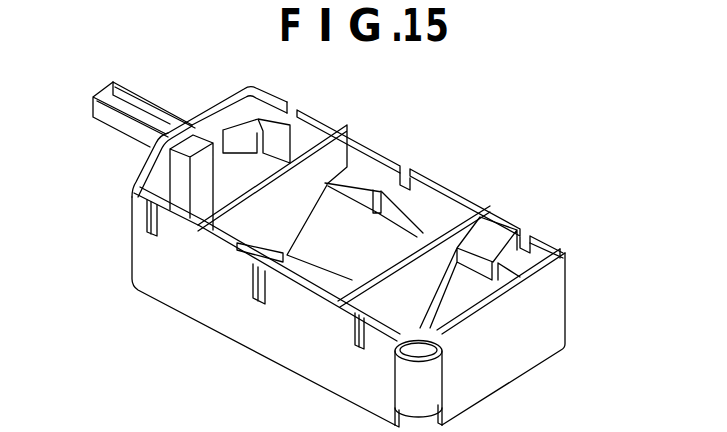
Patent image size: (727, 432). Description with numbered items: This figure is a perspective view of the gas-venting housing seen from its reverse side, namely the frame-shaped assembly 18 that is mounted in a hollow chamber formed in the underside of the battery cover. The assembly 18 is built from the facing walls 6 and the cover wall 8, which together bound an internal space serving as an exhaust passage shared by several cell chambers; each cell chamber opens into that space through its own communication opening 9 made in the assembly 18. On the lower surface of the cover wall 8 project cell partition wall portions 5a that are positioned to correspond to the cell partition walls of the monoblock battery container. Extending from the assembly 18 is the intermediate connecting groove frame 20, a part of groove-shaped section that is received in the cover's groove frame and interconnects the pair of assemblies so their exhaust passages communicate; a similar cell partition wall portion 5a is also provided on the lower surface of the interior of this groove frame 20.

The cell partition wall portion 5a is at (110, 122).
The facing wall 6 is at (258, 330).
The cover wall 8 is at (474, 298).
The communication opening 9 is at (144, 220).
The frame-shaped assembly 18 is at (445, 175).
The intermediate connecting groove frame 20 is at (143, 94).